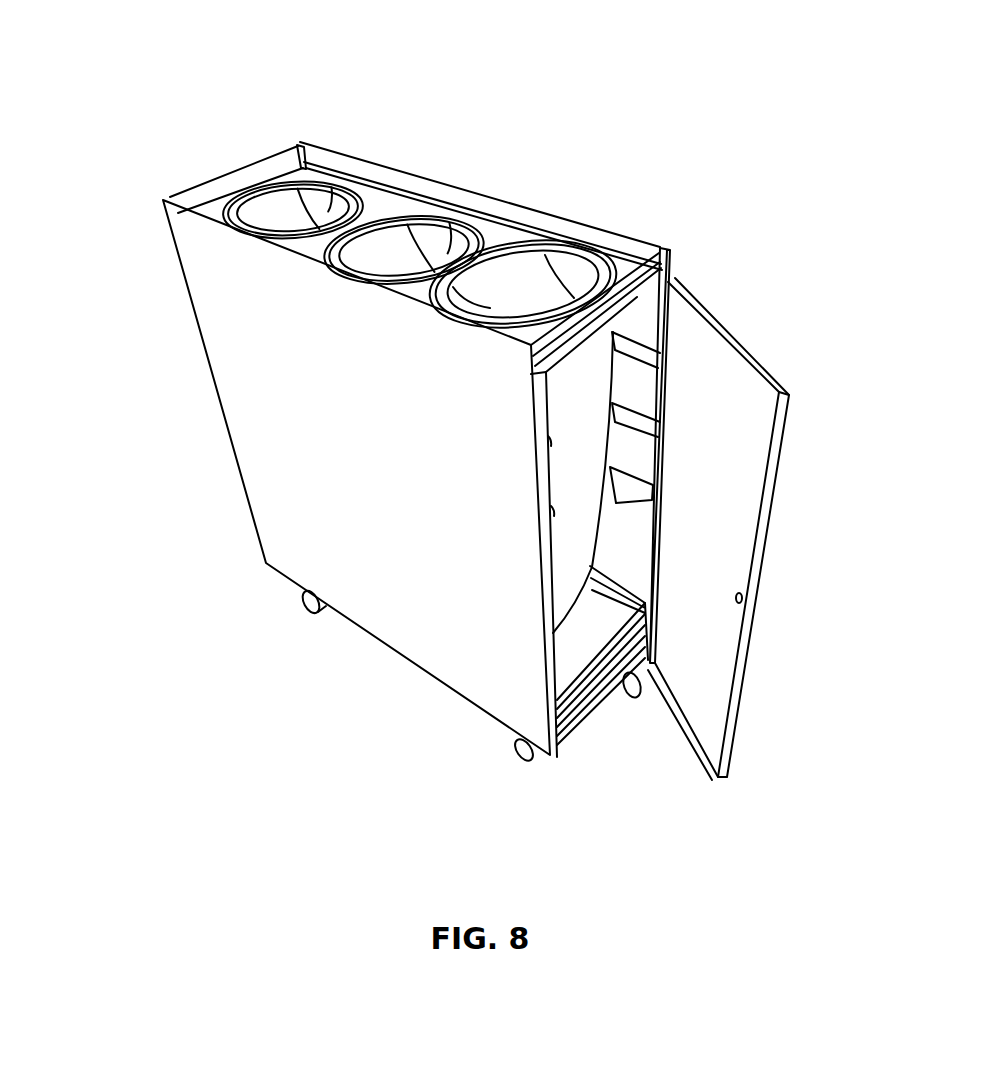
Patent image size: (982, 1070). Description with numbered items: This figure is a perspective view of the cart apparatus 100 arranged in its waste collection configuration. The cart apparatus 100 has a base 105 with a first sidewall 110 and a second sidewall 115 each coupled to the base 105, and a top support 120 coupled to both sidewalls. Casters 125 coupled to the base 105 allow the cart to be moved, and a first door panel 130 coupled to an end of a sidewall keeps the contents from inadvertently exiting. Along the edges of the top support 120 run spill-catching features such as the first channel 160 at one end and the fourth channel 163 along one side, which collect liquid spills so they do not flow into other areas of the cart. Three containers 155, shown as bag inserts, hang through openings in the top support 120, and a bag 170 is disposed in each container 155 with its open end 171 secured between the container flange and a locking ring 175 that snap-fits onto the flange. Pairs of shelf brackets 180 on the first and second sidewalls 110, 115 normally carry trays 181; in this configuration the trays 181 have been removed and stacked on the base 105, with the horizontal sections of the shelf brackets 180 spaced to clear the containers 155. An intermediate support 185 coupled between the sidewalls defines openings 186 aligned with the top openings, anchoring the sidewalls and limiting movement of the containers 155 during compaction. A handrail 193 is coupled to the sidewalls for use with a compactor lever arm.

The cart apparatus 100 is at (211, 108).
The base 105 is at (645, 668).
The first sidewall 110 is at (463, 640).
The second sidewall 115 is at (513, 205).
The top support 120 is at (535, 320).
The casters 125 is at (635, 675).
The first door panel 130 is at (703, 693).
The container 155 is at (640, 354).
The first channel 160 is at (667, 247).
The fourth channel 163 is at (392, 198).
The bag 170 is at (292, 215).
The open end 171 is at (620, 262).
The locking ring 175 is at (303, 167).
The shelf bracket 180 is at (548, 442).
The tray 181 is at (650, 636).
The intermediate support 185 is at (622, 503).
The opening 186 is at (786, 392).
The handrail 193 is at (188, 200).